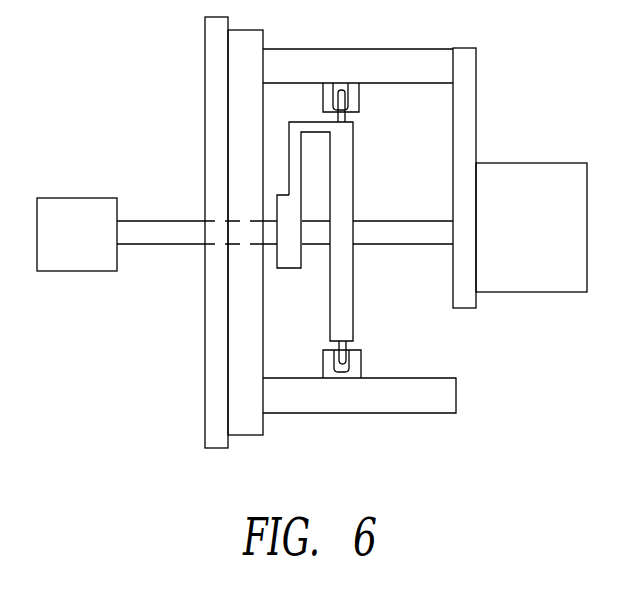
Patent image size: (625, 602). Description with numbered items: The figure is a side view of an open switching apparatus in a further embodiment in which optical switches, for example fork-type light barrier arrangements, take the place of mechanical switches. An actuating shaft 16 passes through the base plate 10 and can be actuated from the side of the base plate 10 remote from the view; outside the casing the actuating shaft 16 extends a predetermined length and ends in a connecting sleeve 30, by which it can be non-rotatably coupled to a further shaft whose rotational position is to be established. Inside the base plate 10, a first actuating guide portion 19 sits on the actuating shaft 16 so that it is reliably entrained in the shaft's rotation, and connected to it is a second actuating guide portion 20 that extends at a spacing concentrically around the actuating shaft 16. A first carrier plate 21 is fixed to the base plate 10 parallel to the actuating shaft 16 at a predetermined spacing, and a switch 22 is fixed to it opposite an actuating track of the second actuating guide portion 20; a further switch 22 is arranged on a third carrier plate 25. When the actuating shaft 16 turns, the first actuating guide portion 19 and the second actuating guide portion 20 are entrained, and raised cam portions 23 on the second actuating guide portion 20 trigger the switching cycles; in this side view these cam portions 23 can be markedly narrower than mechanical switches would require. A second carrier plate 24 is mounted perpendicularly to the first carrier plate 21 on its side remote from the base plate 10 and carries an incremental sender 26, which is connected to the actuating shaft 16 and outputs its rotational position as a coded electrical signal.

The base plate 10 is at (243, 382).
The actuating shaft 16 is at (439, 229).
The first actuating guide portion 19 is at (287, 257).
The second actuating guide portion 20 is at (339, 176).
The first carrier plate 21 is at (366, 58).
The switch 22 is at (353, 355).
The raised cam portion 23 is at (349, 113).
The second carrier plate 24 is at (464, 117).
The third carrier plate 25 is at (450, 402).
The incremental sender 26 is at (537, 238).
The connecting sleeve 30 is at (93, 251).